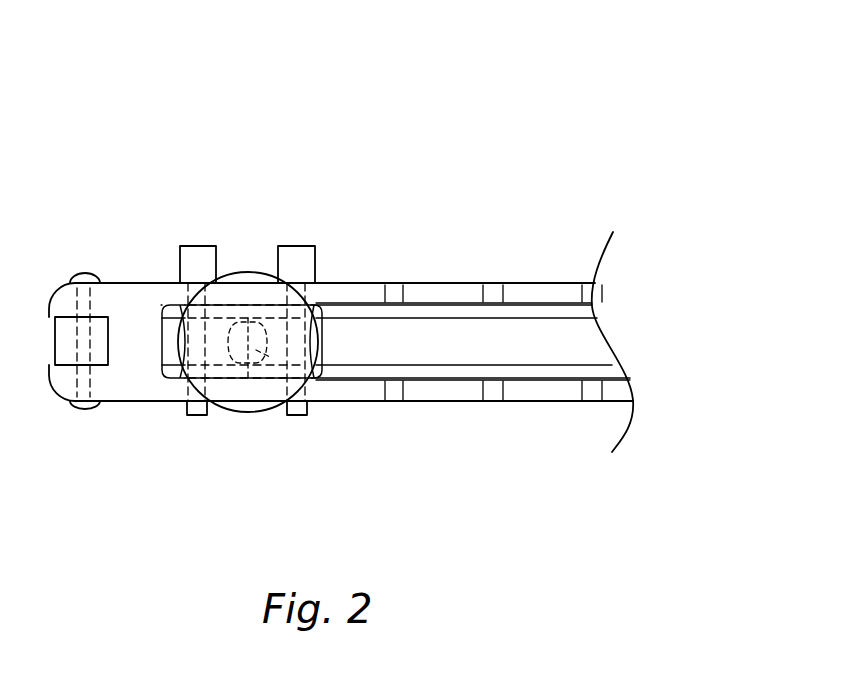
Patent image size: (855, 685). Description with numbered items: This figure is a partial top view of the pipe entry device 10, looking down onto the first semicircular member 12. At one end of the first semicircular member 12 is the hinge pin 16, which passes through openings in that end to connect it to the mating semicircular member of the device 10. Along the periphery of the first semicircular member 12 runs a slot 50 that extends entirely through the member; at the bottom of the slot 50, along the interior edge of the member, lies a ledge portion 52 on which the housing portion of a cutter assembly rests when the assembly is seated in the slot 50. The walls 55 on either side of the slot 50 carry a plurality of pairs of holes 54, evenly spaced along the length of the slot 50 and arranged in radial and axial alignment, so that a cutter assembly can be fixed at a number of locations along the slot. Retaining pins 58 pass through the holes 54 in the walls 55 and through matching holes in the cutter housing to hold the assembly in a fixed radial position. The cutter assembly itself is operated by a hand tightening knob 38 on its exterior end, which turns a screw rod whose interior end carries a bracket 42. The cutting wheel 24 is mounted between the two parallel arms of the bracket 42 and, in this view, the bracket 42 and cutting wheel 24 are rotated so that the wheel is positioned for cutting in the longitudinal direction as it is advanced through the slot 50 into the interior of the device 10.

The pipe entry device 10 is at (455, 125).
The first semicircular member 12 is at (146, 392).
The hinge pin 16 is at (82, 410).
The cutting wheel 24 is at (232, 408).
The hand tightening knob 38 is at (260, 410).
The bracket 42 is at (272, 358).
The slot 50 is at (467, 330).
The ledge portion 52 is at (517, 312).
The pairs of holes 54 is at (392, 402).
The walls 55 is at (567, 292).
The retaining pins 58 is at (197, 257).